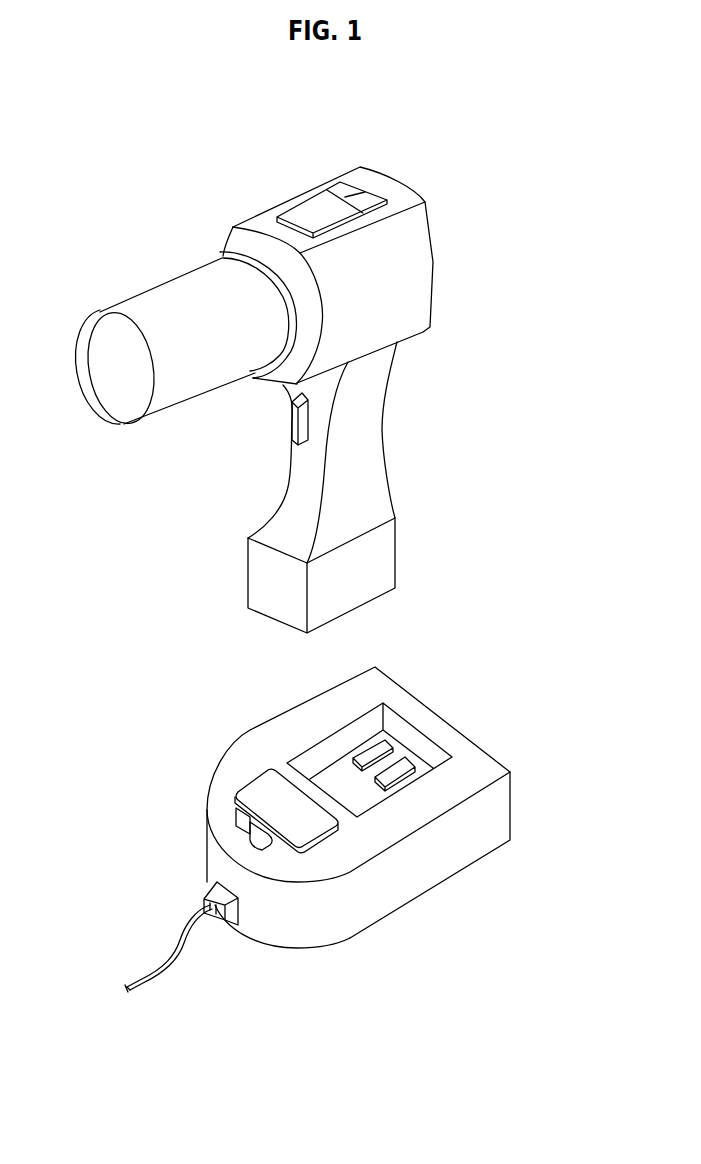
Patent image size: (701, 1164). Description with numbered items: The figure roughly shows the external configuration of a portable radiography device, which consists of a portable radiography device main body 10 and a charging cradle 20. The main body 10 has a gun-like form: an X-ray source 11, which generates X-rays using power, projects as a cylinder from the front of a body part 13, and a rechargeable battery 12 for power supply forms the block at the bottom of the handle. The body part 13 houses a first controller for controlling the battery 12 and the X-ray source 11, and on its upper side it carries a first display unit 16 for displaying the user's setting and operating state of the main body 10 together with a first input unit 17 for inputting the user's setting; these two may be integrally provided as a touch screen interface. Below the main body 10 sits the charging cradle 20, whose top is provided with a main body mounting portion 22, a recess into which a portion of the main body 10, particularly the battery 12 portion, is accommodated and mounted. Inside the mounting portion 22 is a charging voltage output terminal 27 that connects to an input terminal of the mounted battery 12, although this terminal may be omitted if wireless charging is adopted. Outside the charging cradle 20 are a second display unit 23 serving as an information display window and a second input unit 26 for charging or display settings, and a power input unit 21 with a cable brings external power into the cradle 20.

The portable radiography device main body 10 is at (310, 373).
The X-ray source 11 is at (170, 293).
The rechargeable battery 12 is at (387, 559).
The body part 13 is at (423, 275).
The first display unit 16 is at (312, 208).
The first input unit 17 is at (345, 188).
The charging cradle 20 is at (346, 827).
The power input unit 21 is at (187, 952).
The main body mounting portion 22 is at (333, 777).
The second display unit 23 is at (257, 802).
The second input unit 26 is at (247, 822).
The charging voltage output terminal 27 is at (393, 770).